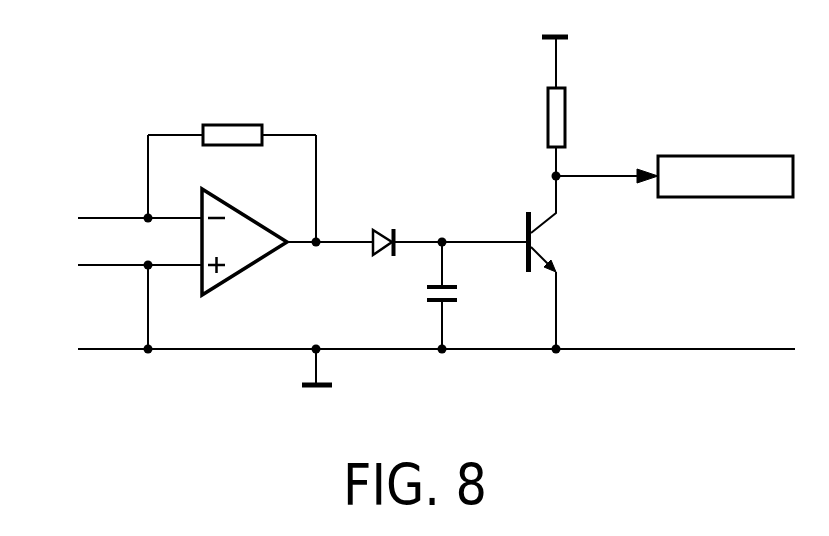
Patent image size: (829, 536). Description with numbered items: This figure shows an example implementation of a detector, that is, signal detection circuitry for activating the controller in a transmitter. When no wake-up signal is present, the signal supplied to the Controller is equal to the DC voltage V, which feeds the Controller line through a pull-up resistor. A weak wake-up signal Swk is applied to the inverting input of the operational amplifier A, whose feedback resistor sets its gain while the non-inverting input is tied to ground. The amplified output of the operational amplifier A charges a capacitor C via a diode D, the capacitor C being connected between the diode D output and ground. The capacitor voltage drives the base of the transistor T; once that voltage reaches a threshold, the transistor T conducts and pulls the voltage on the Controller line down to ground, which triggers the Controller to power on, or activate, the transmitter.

The wake-up signal Swk is at (112, 215).
The operational amplifier A is at (260, 210).
The diode D is at (449, 227).
The capacitor C is at (454, 294).
The transistor T is at (552, 262).
The DC voltage V is at (568, 103).
The controller Controller is at (674, 176).